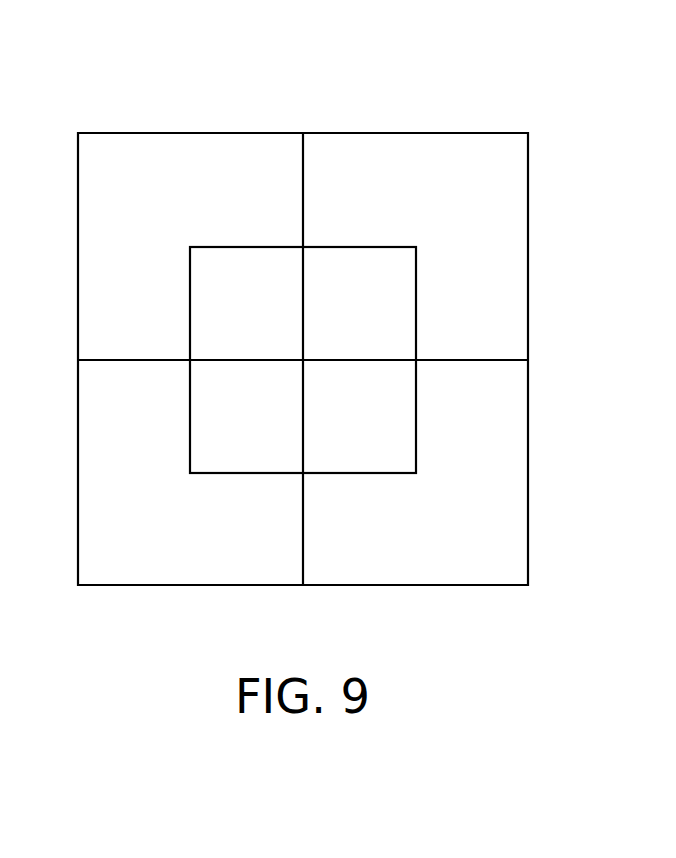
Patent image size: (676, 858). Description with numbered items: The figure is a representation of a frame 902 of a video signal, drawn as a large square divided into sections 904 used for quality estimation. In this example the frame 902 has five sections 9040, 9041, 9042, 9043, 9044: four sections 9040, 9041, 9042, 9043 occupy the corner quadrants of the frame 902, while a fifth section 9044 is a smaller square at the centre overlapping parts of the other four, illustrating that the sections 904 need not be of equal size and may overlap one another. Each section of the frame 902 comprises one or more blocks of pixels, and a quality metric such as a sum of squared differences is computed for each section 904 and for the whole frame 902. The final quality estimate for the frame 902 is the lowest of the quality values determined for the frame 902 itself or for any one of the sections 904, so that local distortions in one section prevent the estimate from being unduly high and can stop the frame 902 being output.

The frame 902 is at (98, 79).
The sections 904 is at (303, 359).
The section 9040 is at (200, 133).
The section 9041 is at (410, 132).
The section 9042 is at (413, 586).
The section 9043 is at (190, 586).
The section 9044 is at (417, 423).